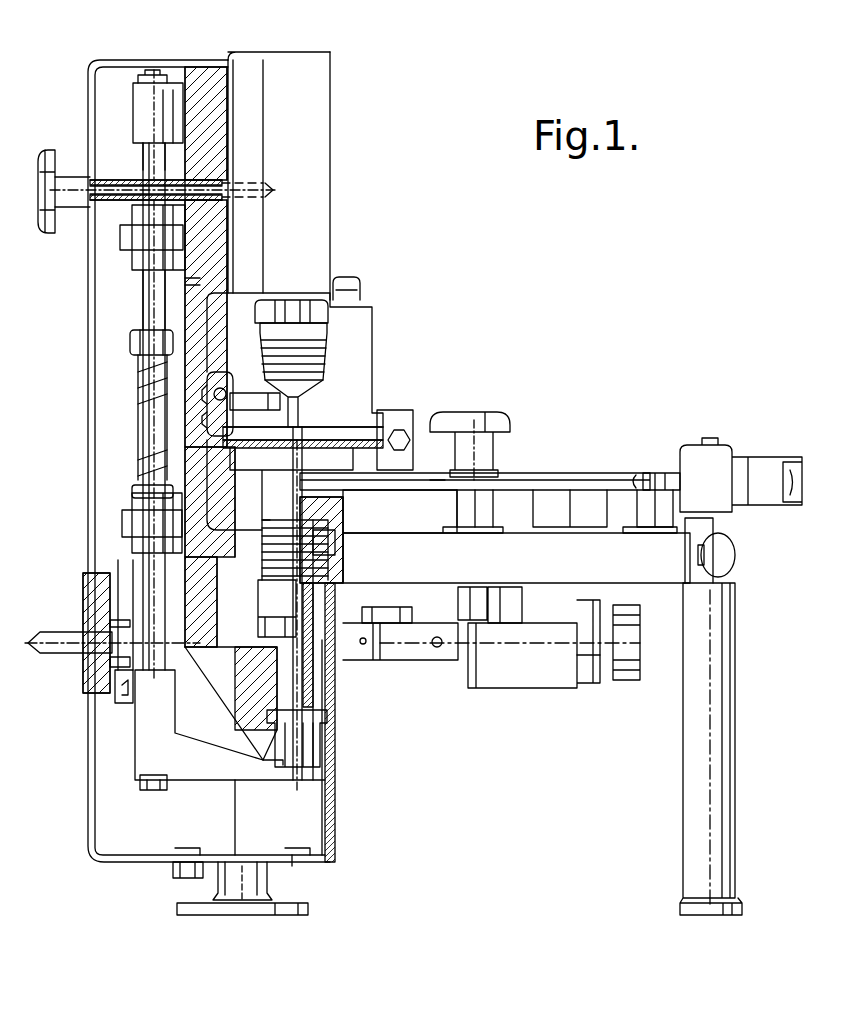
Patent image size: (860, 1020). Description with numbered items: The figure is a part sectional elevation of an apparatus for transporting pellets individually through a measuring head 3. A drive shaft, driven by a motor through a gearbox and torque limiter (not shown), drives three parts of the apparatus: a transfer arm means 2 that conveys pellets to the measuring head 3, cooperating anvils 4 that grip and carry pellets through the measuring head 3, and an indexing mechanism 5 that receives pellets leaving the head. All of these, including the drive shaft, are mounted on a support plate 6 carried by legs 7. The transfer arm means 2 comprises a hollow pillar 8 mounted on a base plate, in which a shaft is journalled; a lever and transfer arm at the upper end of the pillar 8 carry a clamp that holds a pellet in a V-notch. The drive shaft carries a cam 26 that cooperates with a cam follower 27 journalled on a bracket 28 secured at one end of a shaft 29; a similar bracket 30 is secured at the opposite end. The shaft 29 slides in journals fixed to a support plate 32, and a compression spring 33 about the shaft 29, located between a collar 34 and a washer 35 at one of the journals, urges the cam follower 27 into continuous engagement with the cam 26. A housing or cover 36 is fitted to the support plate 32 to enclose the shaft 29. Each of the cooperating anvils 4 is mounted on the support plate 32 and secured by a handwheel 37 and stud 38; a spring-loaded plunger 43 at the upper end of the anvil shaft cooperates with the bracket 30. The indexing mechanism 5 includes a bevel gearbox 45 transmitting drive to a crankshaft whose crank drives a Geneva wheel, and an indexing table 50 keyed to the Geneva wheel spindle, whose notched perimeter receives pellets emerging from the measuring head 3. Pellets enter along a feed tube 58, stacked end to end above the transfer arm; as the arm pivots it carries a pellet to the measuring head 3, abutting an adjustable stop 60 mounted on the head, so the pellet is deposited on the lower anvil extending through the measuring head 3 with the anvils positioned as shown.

The transfer arm means 2 is at (305, 433).
The measuring head 3 is at (342, 458).
The cooperating anvils 4 is at (345, 351).
The indexing mechanism 5 is at (583, 470).
The support plate 6 is at (555, 548).
The legs 7 is at (692, 718).
The hollow pillar 8 is at (255, 507).
The cam 26 is at (100, 580).
The cam follower 27 is at (120, 700).
The bracket 28 is at (148, 745).
The shaft 29 is at (150, 307).
The bracket 30 is at (148, 108).
The support plate 32 is at (200, 280).
The compression spring 33 is at (145, 365).
The collar 34 is at (140, 343).
The washer 35 is at (135, 490).
The housing or cover 36 is at (102, 60).
The handwheel 37 is at (50, 175).
The stud 38 is at (120, 185).
The spring-loaded plunger 43 is at (305, 743).
The bevel gearbox 45 is at (522, 655).
The indexing table 50 is at (540, 478).
The feed tube 58 is at (352, 287).
The adjustable stop 60 is at (215, 432).